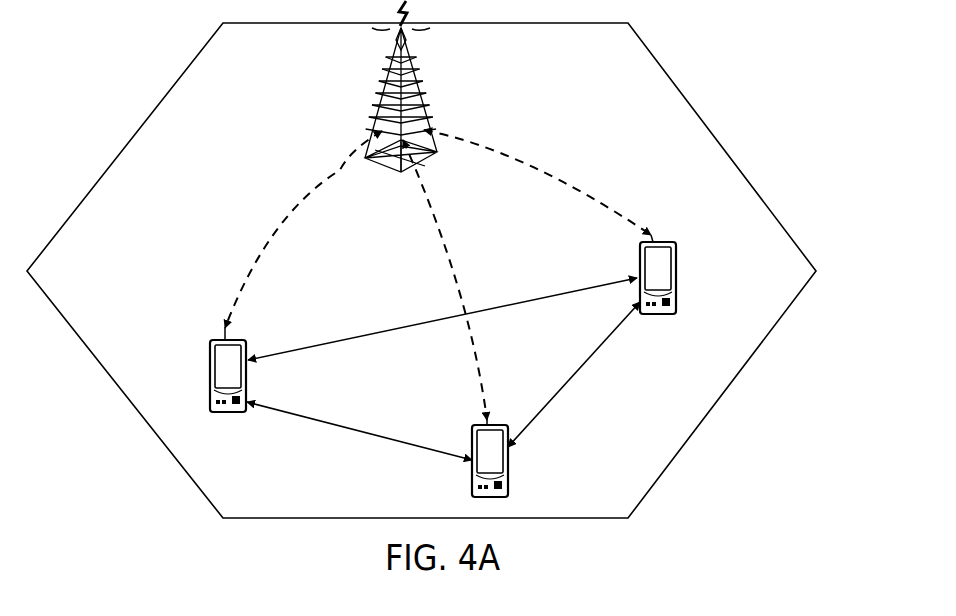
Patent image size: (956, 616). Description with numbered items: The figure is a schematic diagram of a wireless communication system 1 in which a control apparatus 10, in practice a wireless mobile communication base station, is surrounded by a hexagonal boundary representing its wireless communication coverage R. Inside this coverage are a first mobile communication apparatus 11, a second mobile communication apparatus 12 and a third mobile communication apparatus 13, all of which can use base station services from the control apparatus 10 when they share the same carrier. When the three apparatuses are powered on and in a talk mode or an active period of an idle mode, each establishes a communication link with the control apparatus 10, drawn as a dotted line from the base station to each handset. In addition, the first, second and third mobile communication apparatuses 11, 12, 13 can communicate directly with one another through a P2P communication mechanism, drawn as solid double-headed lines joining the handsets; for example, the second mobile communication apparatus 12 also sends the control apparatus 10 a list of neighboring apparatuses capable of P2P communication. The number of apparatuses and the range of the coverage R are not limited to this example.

The wireless communication system 1 is at (546, 118).
The wireless communication coverage R is at (714, 140).
The control apparatus 10 is at (390, 66).
The first mobile communication apparatus 11 is at (209, 358).
The second mobile communication apparatus 12 is at (510, 478).
The third mobile communication apparatus 13 is at (640, 250).